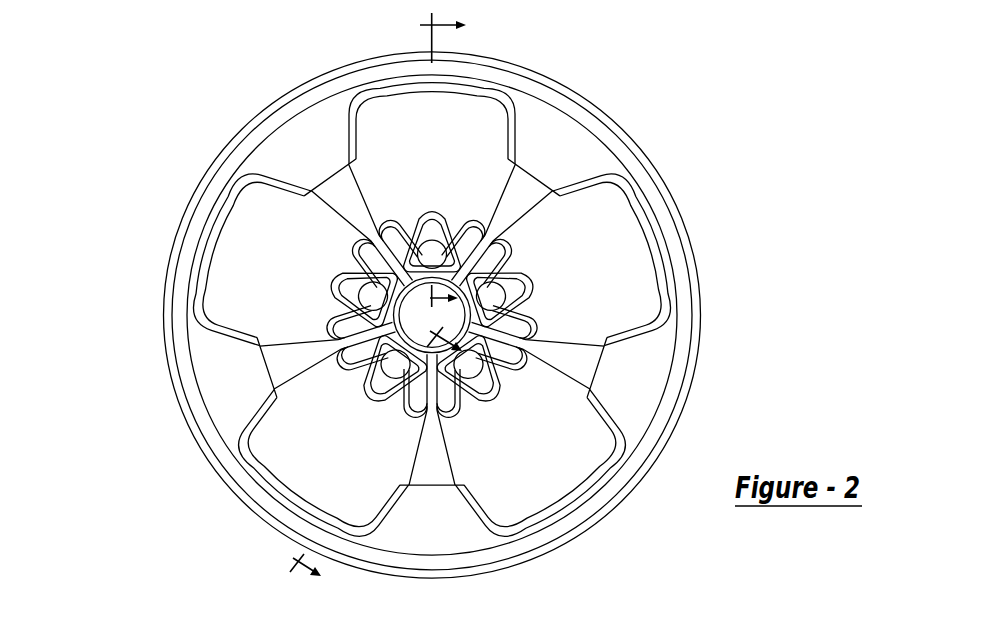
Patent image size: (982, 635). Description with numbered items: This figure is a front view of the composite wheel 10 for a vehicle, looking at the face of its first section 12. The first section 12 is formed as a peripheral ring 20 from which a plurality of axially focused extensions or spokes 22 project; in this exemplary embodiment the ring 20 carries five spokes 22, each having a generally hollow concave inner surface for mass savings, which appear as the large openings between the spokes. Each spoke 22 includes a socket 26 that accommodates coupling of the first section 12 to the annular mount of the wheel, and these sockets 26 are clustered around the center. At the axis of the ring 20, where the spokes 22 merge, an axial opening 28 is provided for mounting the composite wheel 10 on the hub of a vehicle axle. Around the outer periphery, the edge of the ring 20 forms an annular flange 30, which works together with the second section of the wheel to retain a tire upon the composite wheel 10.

The composite wheel 10 is at (150, 164).
The first section 12 is at (587, 91).
The peripheral ring 20 is at (582, 150).
The spokes 22 is at (465, 123).
The socket 26 is at (433, 230).
The axial opening 28 is at (453, 317).
The annular flange 30 is at (660, 175).